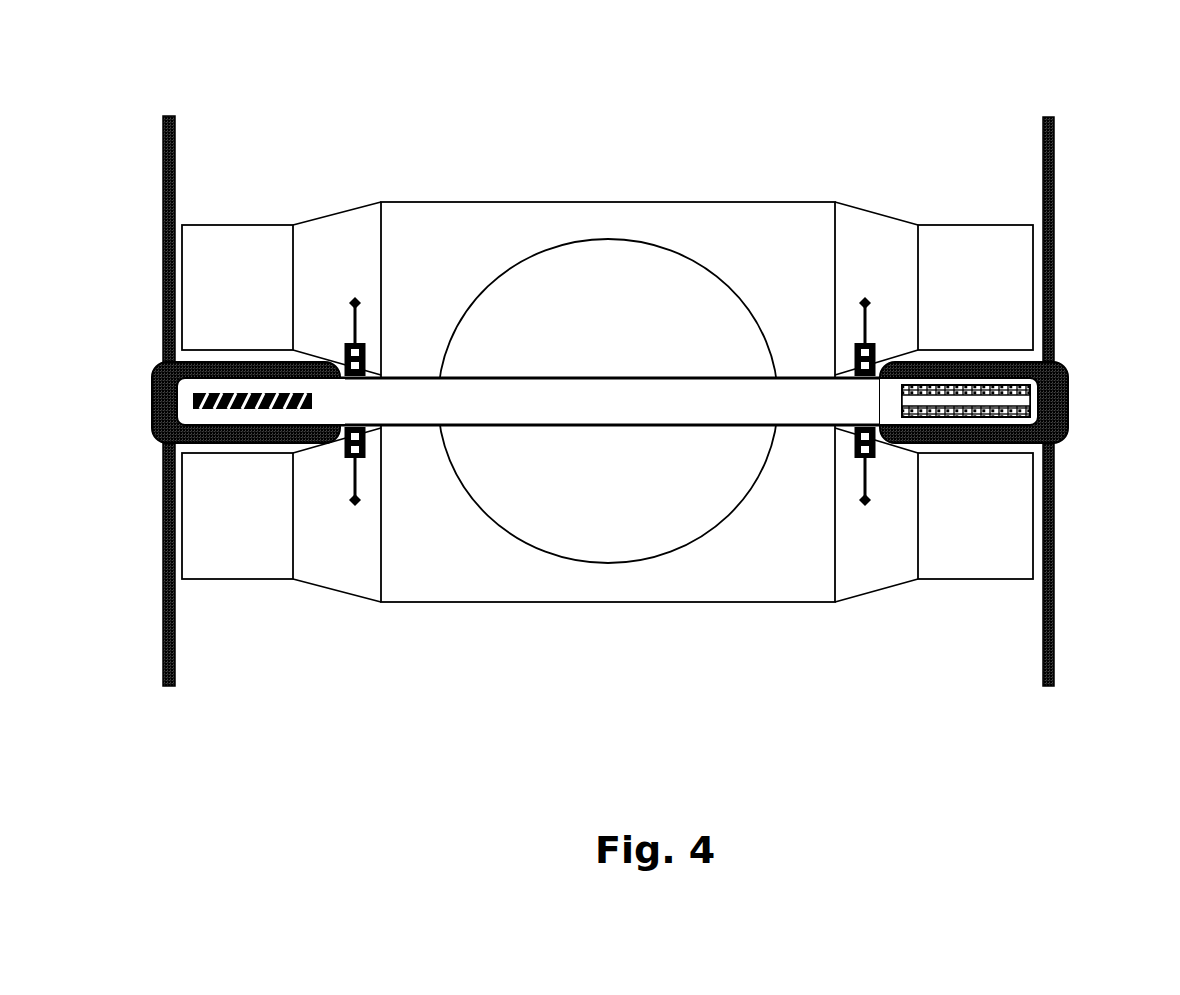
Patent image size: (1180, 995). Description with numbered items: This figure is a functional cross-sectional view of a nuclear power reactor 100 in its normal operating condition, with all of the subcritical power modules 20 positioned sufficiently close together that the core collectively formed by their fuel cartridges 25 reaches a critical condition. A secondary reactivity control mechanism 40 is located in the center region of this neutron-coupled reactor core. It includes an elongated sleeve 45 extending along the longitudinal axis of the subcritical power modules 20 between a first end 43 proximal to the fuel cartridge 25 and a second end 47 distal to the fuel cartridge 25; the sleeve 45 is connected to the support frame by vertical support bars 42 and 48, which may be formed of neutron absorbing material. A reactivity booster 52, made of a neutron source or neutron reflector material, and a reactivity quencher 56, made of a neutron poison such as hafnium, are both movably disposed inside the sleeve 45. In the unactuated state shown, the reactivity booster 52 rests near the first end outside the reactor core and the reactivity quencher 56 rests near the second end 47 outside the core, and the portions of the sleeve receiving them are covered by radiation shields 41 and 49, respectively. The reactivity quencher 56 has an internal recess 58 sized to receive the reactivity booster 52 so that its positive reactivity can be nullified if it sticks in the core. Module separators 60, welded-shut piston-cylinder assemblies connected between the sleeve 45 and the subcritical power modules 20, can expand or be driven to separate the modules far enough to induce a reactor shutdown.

The nuclear power reactor 100 is at (896, 104).
The subcritical power module 20 is at (458, 228).
The fuel cartridge 25 is at (620, 338).
The reactivity control mechanism 40 is at (607, 401).
The radiation shield 41 is at (215, 411).
The support bar 42 is at (173, 190).
The first end 43 is at (188, 405).
The sleeve 45 is at (482, 408).
The second end 47 is at (1019, 383).
The support bar 48 is at (173, 645).
The radiation shield 49 is at (1006, 392).
The reactivity booster 52 is at (208, 405).
The reactivity quencher 56 is at (1015, 446).
The internal recess 58 is at (1016, 398).
The module separator 60 is at (893, 324).